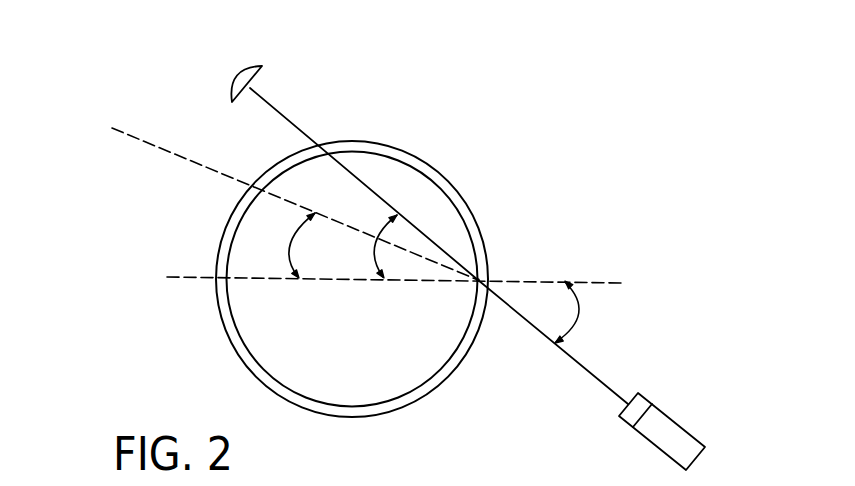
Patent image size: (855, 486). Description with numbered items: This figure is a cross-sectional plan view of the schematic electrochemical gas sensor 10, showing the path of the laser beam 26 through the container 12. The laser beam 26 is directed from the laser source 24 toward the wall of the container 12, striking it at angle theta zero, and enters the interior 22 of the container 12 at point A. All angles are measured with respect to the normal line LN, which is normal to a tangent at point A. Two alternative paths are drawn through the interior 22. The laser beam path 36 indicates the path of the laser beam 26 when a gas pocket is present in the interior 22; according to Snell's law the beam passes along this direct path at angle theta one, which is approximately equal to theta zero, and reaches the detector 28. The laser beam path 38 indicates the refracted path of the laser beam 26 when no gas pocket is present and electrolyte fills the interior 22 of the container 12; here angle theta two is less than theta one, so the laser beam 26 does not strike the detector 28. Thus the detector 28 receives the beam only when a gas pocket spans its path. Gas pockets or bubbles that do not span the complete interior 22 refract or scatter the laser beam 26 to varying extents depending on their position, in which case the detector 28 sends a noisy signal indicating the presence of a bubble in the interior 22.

The optical assembly / container 10 is at (420, 261).
The container 12 is at (420, 279).
The interior 22 is at (465, 247).
The detector 24 is at (667, 417).
The laser beam 26 is at (585, 371).
The detector 28 is at (232, 86).
The laser beam path 36 is at (272, 107).
The laser beam path 38 is at (213, 173).
The point A is at (479, 279).
The normal line LN is at (202, 279).